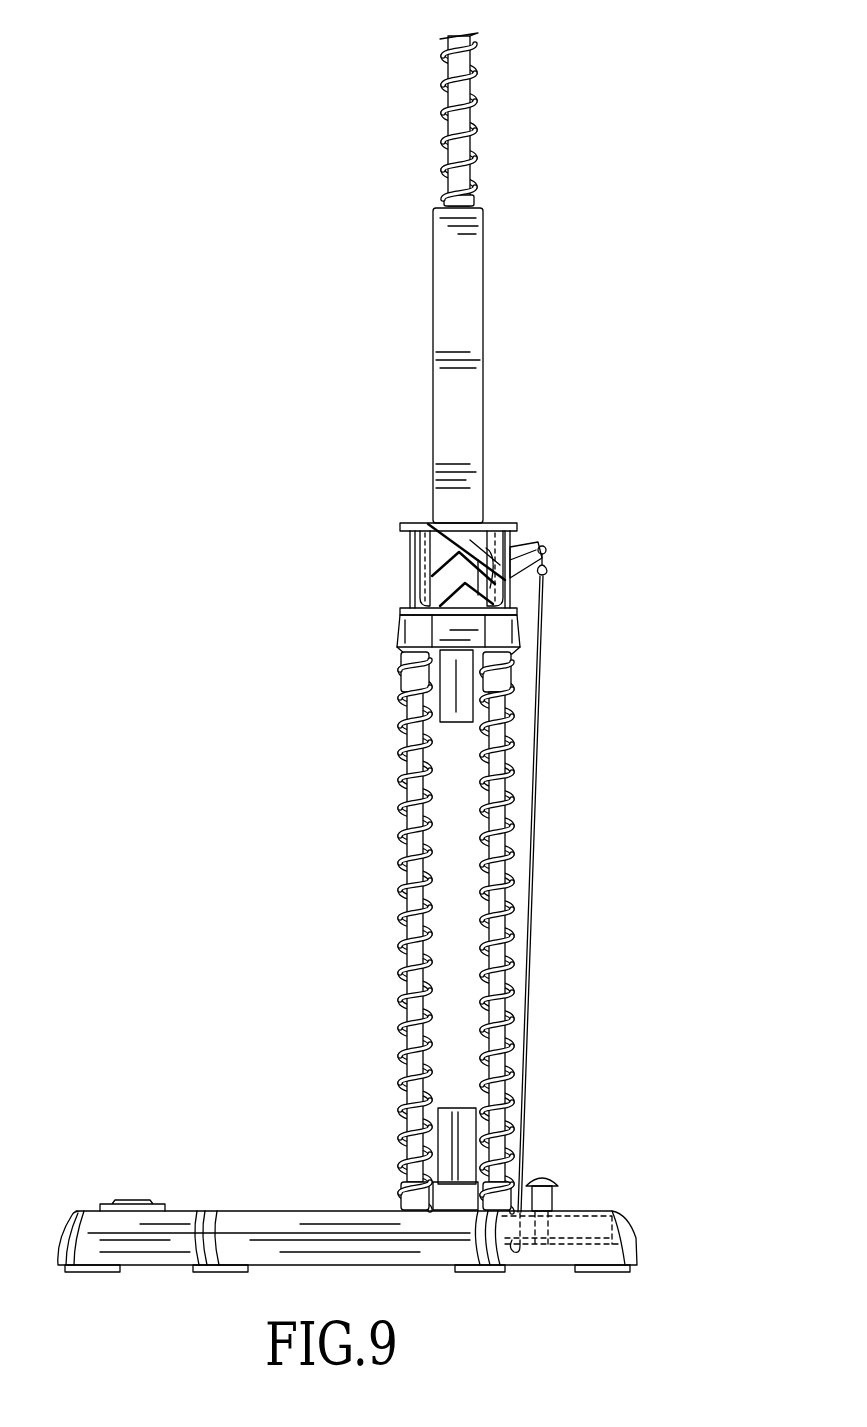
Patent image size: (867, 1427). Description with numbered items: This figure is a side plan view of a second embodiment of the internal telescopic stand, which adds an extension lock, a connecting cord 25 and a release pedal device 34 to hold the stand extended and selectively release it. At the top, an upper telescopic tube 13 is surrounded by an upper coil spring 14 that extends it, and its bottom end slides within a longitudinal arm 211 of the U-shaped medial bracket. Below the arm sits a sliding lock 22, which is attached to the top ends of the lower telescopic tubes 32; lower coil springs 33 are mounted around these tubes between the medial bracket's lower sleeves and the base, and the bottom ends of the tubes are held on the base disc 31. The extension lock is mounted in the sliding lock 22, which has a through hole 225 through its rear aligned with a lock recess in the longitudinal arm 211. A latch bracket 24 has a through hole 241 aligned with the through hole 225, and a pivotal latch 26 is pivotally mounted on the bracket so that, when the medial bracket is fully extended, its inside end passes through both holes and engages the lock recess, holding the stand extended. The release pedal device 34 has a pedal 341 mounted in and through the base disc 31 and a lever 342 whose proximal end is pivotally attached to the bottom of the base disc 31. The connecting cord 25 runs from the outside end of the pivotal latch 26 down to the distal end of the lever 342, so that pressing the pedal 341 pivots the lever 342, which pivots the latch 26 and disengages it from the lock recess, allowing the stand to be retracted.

The upper telescopic tube 13 is at (462, 102).
The upper coil spring 14 is at (482, 119).
The longitudinal arm 211 is at (478, 320).
The sliding lock 22 is at (449, 538).
The through hole 225 is at (472, 524).
The latch bracket 24 is at (503, 524).
The pivotal latch 26 is at (549, 547).
The through hole 241 is at (505, 600).
The connecting cord 25 is at (535, 760).
The lower coil spring 33 is at (510, 836).
The lower telescopic tube 32 is at (537, 932).
The base disc 31 is at (296, 1218).
The release pedal device 34 is at (561, 1212).
The pedal 341 is at (549, 1192).
The lever 342 is at (555, 1244).